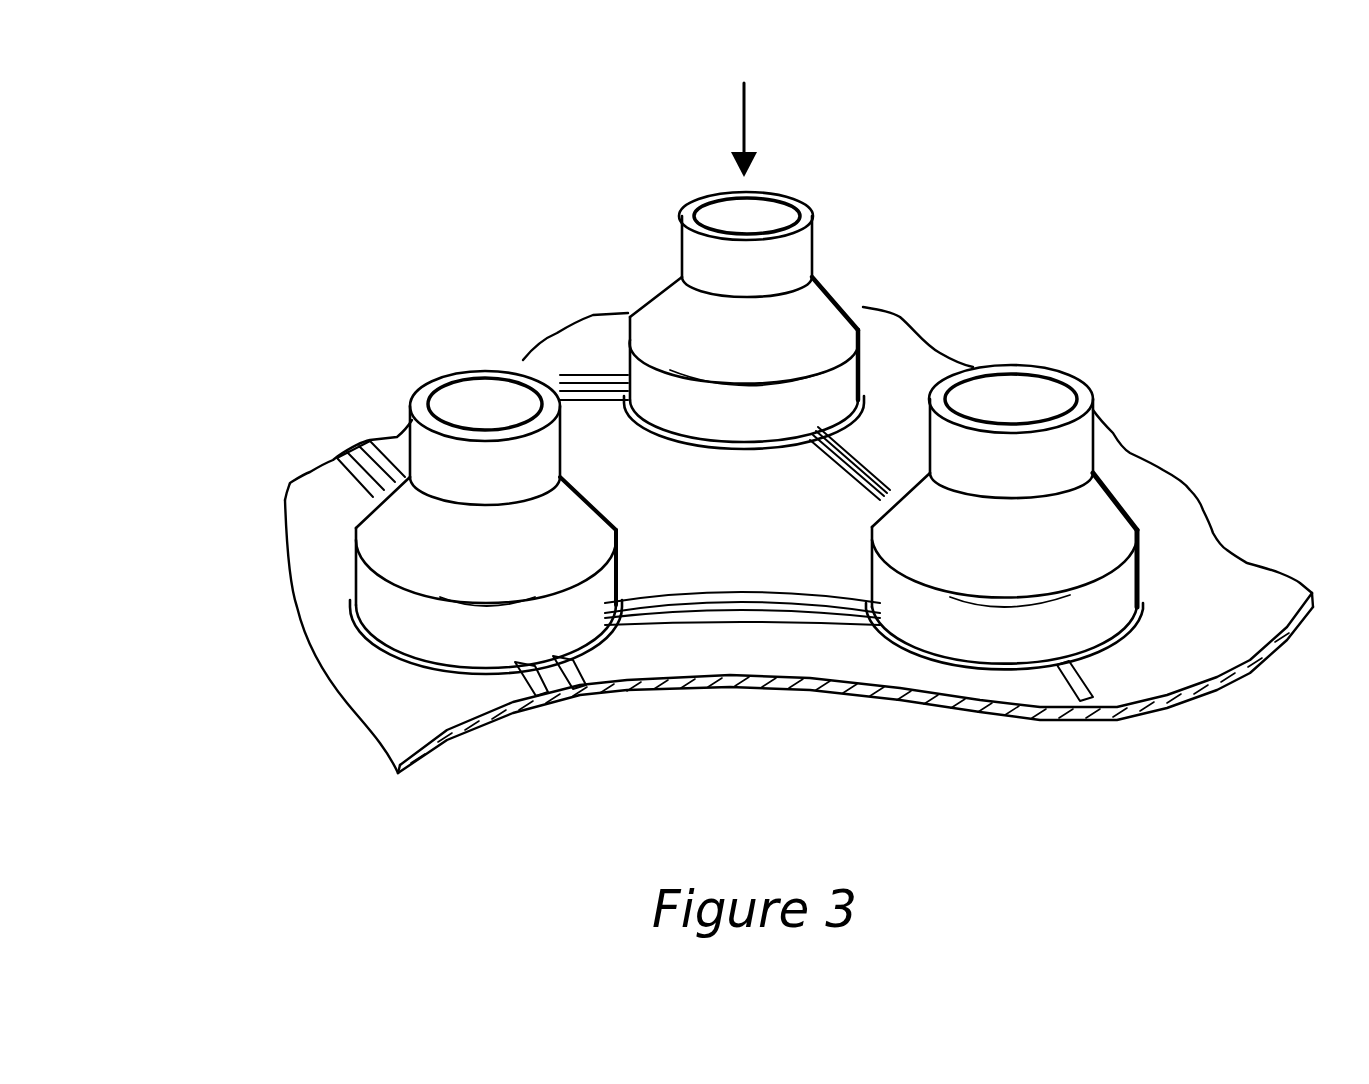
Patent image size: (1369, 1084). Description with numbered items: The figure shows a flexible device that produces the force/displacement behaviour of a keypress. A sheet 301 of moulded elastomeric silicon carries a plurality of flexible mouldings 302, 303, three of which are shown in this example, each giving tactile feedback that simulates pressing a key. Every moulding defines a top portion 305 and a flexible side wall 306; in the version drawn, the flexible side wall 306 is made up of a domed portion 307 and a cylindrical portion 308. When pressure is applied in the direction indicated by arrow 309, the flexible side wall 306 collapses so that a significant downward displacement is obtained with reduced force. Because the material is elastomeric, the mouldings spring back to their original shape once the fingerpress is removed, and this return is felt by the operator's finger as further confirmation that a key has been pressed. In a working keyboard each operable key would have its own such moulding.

The sheet 301 is at (950, 317).
The flexible moulding 302 is at (1067, 512).
The flexible moulding 303 is at (397, 537).
The top portion 305 is at (682, 213).
The flexible side wall 306 is at (637, 277).
The domed portion 307 is at (798, 305).
The cylindrical portion 308 is at (628, 367).
The arrow 309 is at (744, 123).